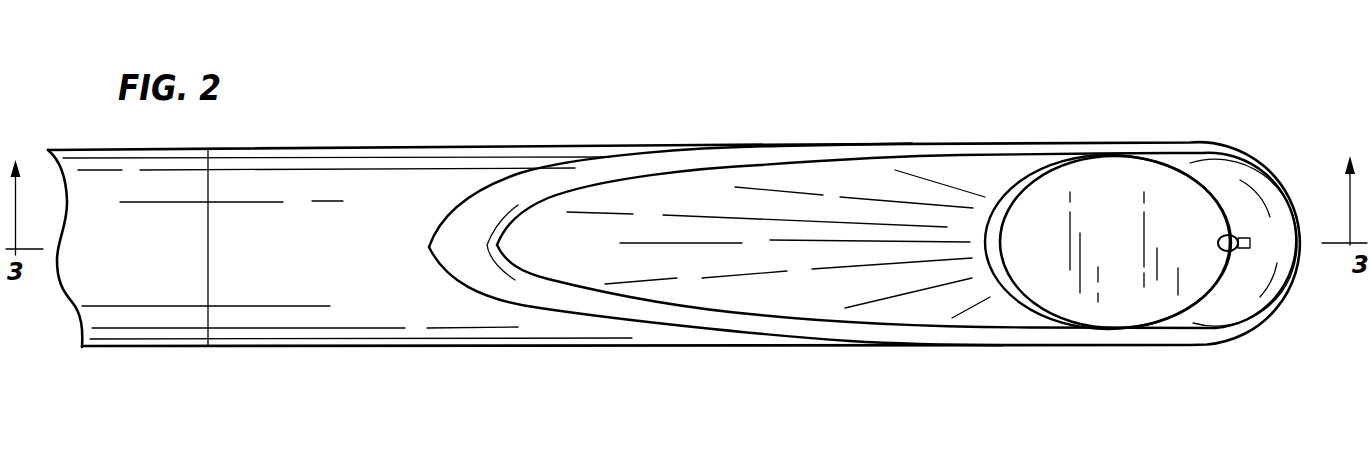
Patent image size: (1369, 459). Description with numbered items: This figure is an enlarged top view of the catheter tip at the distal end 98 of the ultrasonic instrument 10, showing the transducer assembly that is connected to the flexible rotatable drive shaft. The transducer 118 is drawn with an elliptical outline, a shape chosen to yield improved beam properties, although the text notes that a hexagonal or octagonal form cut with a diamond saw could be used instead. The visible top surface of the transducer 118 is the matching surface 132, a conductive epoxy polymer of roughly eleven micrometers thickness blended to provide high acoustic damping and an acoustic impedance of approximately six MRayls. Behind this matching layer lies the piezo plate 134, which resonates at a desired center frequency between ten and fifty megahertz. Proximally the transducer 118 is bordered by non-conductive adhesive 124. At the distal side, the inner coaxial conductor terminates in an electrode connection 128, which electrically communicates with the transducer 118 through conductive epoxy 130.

The ultrasonic instrument 10 is at (338, 125).
The distal end 98 is at (489, 131).
The non-conductive adhesive 124 is at (853, 215).
The piezo plate 134 is at (1013, 203).
The transducer 118 is at (1172, 188).
The matching surface 132 is at (1083, 222).
The electrode connection 128 is at (1245, 235).
The conductive epoxy 130 is at (1233, 255).